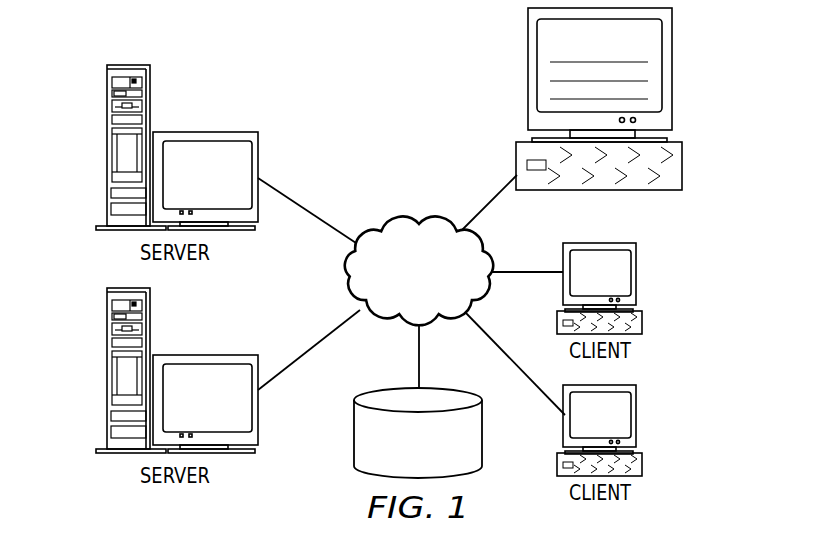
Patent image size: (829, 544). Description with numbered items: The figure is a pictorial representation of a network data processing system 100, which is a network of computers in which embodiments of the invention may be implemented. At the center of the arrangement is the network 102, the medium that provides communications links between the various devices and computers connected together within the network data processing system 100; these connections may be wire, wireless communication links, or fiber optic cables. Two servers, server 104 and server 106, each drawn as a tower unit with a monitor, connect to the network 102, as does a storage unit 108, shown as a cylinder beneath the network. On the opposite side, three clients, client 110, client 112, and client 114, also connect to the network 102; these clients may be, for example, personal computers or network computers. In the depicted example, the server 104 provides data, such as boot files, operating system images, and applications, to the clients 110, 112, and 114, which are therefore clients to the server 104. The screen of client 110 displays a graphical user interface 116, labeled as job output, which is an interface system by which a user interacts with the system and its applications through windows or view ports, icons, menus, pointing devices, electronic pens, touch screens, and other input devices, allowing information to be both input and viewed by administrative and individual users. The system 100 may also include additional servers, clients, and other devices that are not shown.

The network data processing system 100 is at (364, 105).
The network 102 is at (389, 222).
The server 104 is at (106, 150).
The server 106 is at (106, 373).
The storage unit 108 is at (354, 440).
The client 110 is at (600, 113).
The client 112 is at (636, 272).
The client 114 is at (636, 415).
The graphical user interface 116 is at (547, 70).